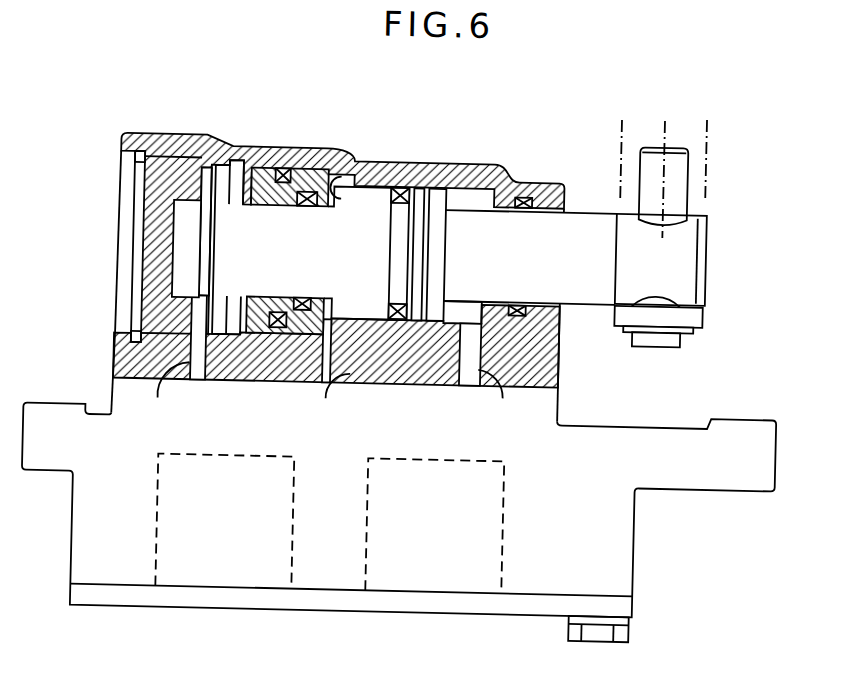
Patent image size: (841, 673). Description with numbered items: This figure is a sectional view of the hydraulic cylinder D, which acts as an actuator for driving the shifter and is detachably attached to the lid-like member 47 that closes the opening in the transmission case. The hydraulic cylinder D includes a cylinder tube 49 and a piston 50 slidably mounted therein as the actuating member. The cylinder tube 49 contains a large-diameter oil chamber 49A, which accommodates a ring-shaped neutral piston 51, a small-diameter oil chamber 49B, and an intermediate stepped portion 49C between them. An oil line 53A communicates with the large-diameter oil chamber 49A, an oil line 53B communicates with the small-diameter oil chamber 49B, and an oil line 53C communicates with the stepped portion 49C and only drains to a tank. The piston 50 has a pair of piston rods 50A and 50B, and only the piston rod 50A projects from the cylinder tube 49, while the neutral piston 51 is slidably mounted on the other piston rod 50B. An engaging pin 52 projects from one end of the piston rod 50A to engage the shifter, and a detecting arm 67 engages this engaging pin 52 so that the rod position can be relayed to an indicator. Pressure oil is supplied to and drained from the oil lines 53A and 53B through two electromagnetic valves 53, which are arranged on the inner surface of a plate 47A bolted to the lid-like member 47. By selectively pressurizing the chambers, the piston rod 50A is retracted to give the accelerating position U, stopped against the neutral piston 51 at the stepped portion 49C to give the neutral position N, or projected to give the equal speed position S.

The hydraulic cylinder D is at (500, 155).
The lid-like member 47 is at (641, 542).
The plate 47A is at (628, 603).
The cylinder tube 49 is at (286, 170).
The large-diameter oil chamber 49A is at (239, 324).
The small-diameter oil chamber 49B is at (451, 318).
The intermediate stepped portion 49C is at (355, 188).
The piston 50 is at (370, 191).
The piston rod 50A is at (590, 300).
The piston rod 50B is at (237, 166).
The neutral piston 51 is at (308, 172).
The engaging pin 52 is at (674, 196).
The electromagnetic valves 53 is at (300, 482).
The oil line 53A is at (162, 398).
The oil line 53B is at (506, 398).
The oil line 53C is at (340, 400).
The detecting arm 67 is at (698, 311).
The accelerating position U is at (623, 146).
The neutral position N is at (665, 164).
The equal speed position S is at (707, 146).